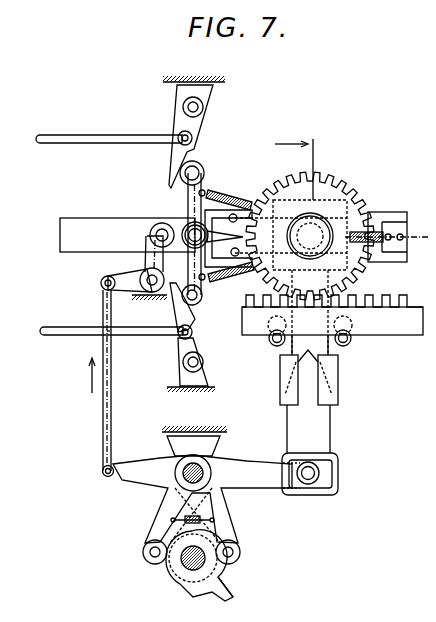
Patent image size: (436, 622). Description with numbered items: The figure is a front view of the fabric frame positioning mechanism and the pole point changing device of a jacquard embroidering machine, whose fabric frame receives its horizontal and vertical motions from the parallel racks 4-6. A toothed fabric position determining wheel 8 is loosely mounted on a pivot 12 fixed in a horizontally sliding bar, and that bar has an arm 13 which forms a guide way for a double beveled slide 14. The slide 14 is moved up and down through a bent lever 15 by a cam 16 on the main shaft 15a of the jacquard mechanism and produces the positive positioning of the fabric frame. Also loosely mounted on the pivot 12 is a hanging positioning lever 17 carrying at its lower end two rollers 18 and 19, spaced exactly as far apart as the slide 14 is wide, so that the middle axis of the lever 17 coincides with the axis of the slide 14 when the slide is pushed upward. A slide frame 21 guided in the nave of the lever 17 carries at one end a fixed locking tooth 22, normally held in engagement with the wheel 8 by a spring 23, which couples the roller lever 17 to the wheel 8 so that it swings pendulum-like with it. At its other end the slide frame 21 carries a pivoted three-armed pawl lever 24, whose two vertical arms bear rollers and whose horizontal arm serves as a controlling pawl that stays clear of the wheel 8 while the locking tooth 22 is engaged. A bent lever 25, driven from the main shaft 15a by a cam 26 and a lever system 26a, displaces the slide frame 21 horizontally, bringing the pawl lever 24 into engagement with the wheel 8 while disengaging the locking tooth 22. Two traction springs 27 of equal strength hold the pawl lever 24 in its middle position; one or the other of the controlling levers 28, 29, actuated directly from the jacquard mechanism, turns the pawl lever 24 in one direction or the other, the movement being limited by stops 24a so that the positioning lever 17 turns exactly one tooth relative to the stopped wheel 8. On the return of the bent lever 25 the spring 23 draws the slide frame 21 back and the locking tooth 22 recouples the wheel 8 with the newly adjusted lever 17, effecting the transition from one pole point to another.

The racks 4-6 is at (380, 324).
The fabric position determining wheel 8 is at (299, 169).
The pivot 12 is at (318, 225).
The arm 13 is at (293, 308).
The double beveled slide 14 is at (309, 425).
The bent lever 15 is at (250, 463).
The main shaft 15a is at (183, 568).
The cam 16 is at (233, 597).
The positioning lever 17 is at (330, 347).
The roller 18 is at (272, 346).
The roller 19 is at (360, 345).
The slide frame 21 is at (380, 211).
The locking tooth 22 is at (389, 243).
The spring 23 is at (386, 226).
The three-armed pawl lever 24 is at (193, 208).
The stops 24a is at (234, 214).
The bent lever 25 is at (124, 278).
The cam 26 is at (179, 590).
The lever system 26a is at (130, 470).
The traction springs 27 is at (250, 200).
The controlling lever 28 is at (178, 166).
The controlling lever 29 is at (176, 300).